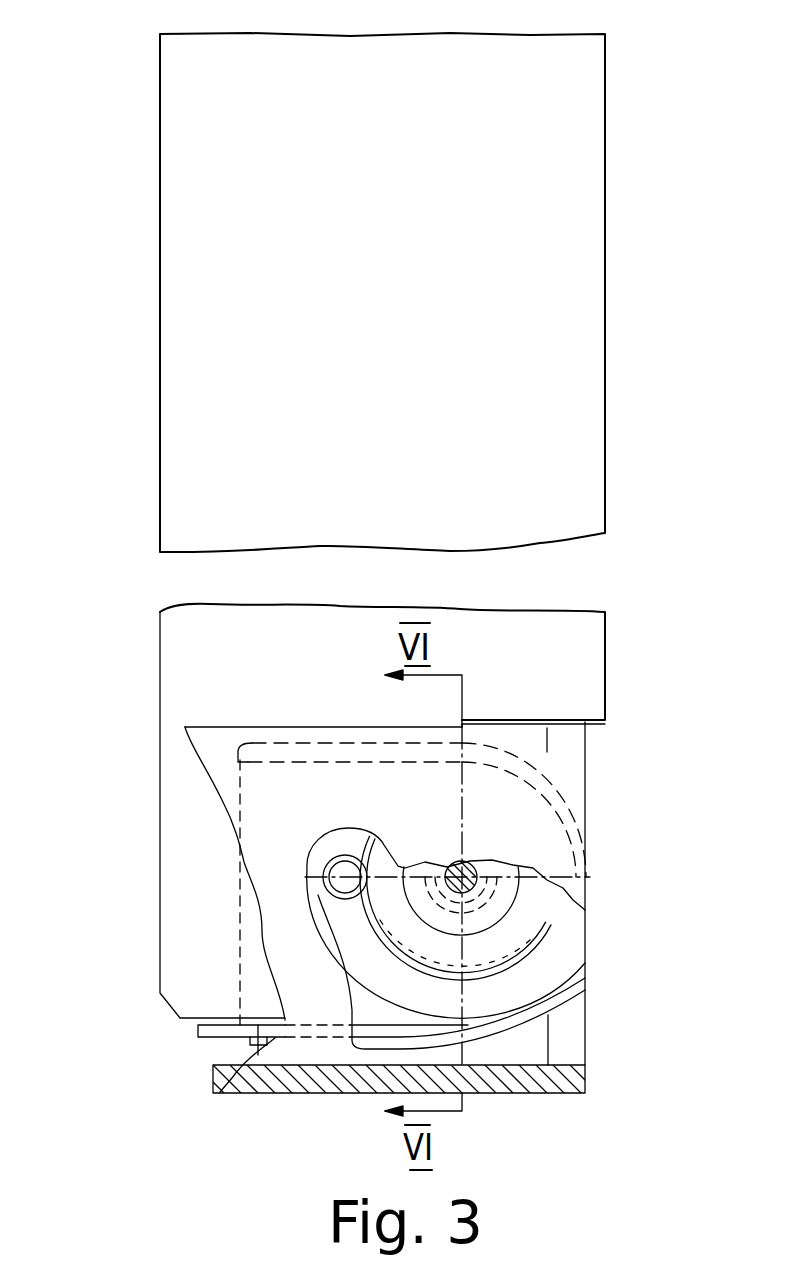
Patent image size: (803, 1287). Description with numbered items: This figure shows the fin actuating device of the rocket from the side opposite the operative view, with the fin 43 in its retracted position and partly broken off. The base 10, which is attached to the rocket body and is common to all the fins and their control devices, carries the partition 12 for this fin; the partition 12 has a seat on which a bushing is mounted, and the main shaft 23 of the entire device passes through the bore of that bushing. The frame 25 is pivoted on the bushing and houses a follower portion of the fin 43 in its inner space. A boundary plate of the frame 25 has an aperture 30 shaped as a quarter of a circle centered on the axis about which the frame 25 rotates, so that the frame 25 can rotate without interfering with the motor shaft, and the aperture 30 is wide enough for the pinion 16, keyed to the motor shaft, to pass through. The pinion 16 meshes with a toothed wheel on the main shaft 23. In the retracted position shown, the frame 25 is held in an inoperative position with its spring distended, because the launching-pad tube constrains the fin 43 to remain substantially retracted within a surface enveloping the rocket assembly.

The base 10 is at (303, 1093).
The partition 12 is at (293, 875).
The pinion 16 is at (325, 862).
The main shaft 23 is at (480, 872).
The frame 25 is at (553, 790).
The aperture 30 is at (360, 943).
The fin 43 is at (607, 305).